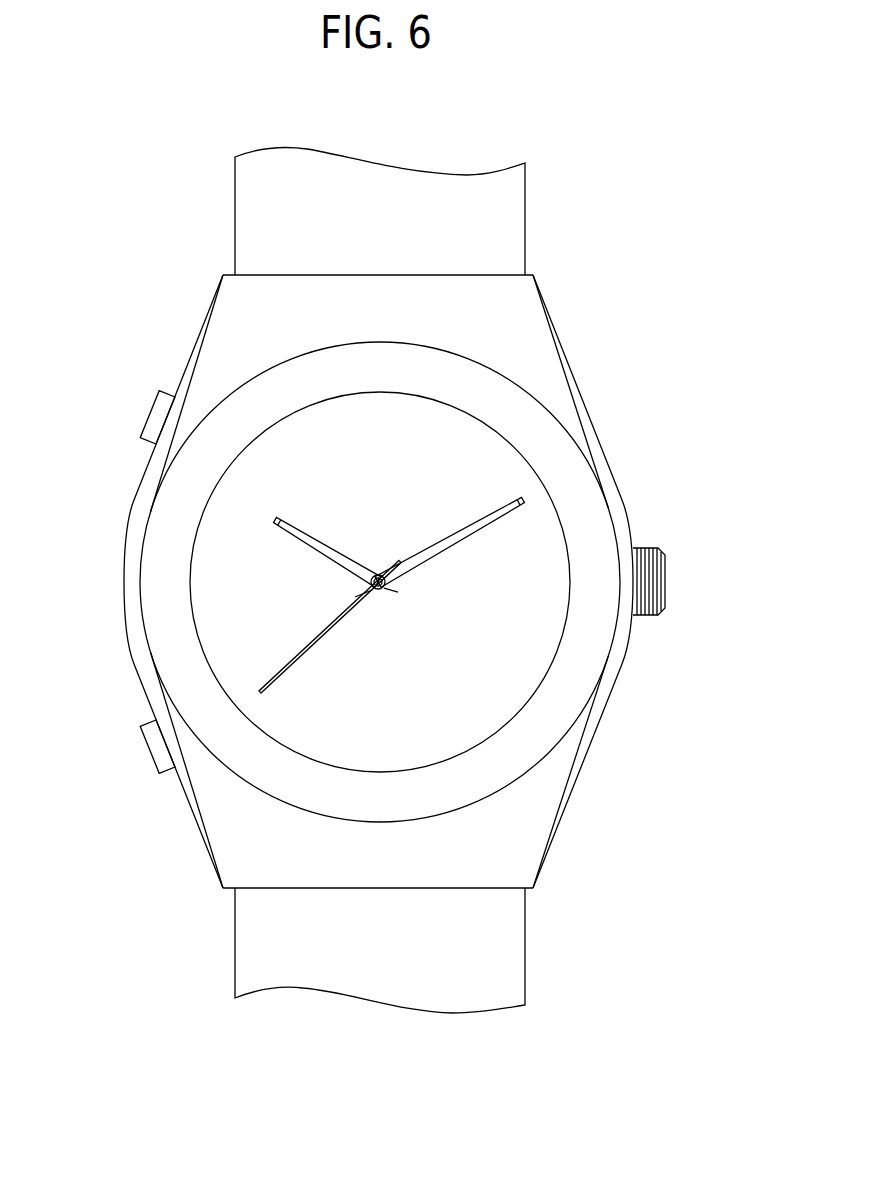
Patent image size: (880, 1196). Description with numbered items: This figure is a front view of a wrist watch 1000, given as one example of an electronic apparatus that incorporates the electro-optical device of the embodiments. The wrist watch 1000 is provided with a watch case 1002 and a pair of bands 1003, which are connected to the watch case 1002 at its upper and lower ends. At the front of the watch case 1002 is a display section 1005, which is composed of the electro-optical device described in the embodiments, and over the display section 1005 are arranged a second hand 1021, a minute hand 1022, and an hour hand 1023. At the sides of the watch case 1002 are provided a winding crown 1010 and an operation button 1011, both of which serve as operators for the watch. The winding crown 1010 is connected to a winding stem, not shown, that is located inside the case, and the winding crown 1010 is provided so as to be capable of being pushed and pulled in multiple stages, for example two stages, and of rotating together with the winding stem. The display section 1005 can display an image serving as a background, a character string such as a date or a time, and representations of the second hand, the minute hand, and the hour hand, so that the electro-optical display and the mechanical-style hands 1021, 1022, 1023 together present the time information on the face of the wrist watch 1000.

The wrist watch 1000 is at (677, 242).
The watch case 1002 is at (572, 360).
The bands 1003 is at (512, 218).
The display section 1005 is at (535, 545).
The winding crown 1010 is at (658, 586).
The operation button 1011 is at (155, 415).
The second hand 1021 is at (258, 678).
The minute hand 1022 is at (533, 496).
The hour hand 1023 is at (270, 518).